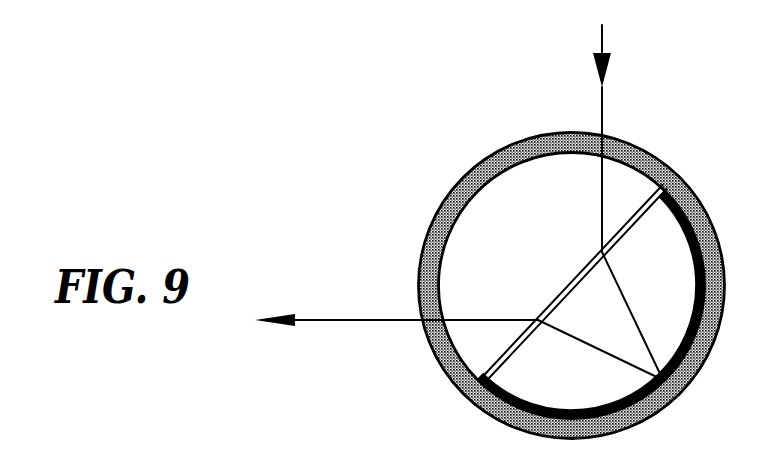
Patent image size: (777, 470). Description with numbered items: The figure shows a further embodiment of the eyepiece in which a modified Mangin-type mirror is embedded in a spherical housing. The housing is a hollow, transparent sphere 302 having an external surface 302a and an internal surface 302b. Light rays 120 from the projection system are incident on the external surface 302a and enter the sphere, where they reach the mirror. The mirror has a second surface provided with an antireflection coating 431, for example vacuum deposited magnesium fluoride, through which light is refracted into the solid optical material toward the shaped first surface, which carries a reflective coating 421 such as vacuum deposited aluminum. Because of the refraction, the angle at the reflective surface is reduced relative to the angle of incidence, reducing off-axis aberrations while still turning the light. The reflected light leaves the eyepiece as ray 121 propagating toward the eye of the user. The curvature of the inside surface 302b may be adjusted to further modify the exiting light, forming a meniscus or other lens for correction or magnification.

The hollow transparent sphere 302 is at (461, 181).
The external surface 302a is at (495, 153).
The internal surface 302b is at (438, 220).
The reflective coating 421 is at (492, 410).
The antireflection coating 431 is at (582, 268).
The light rays 120 is at (602, 106).
The ray 121 is at (353, 320).